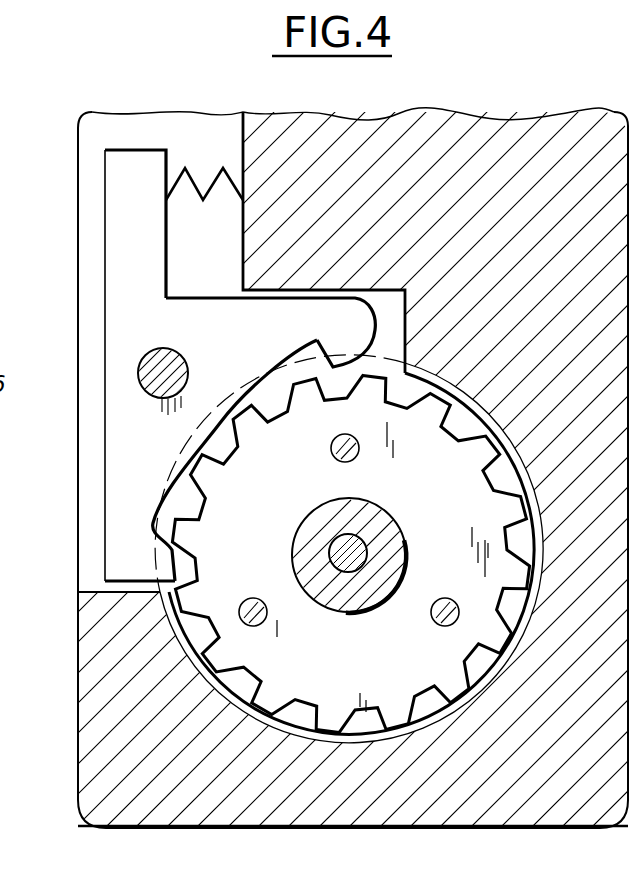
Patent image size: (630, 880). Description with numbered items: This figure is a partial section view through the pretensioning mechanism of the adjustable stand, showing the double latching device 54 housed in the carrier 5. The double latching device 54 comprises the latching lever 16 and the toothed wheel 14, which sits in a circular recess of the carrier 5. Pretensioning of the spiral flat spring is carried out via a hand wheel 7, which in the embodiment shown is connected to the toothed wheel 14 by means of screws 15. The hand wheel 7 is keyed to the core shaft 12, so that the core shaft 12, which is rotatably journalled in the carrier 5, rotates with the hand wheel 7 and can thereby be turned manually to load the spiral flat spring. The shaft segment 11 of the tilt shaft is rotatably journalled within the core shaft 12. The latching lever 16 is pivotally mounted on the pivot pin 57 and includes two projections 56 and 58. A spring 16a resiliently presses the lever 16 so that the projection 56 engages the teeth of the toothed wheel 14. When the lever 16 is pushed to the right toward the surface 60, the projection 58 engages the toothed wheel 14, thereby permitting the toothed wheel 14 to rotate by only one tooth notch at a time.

The carrier 5 is at (424, 130).
The hand wheel 7 is at (286, 553).
The shaft segment 11 is at (347, 572).
The core shaft 12 is at (383, 522).
The toothed wheel 14 is at (178, 600).
The screws 15 is at (333, 452).
The latching lever 16 is at (134, 168).
The spring 16a is at (203, 205).
The double latching device 54 is at (201, 320).
The projection 56 is at (163, 569).
The pivot pin 57 is at (157, 365).
The projection 58 is at (350, 333).
The surface 60 is at (243, 136).